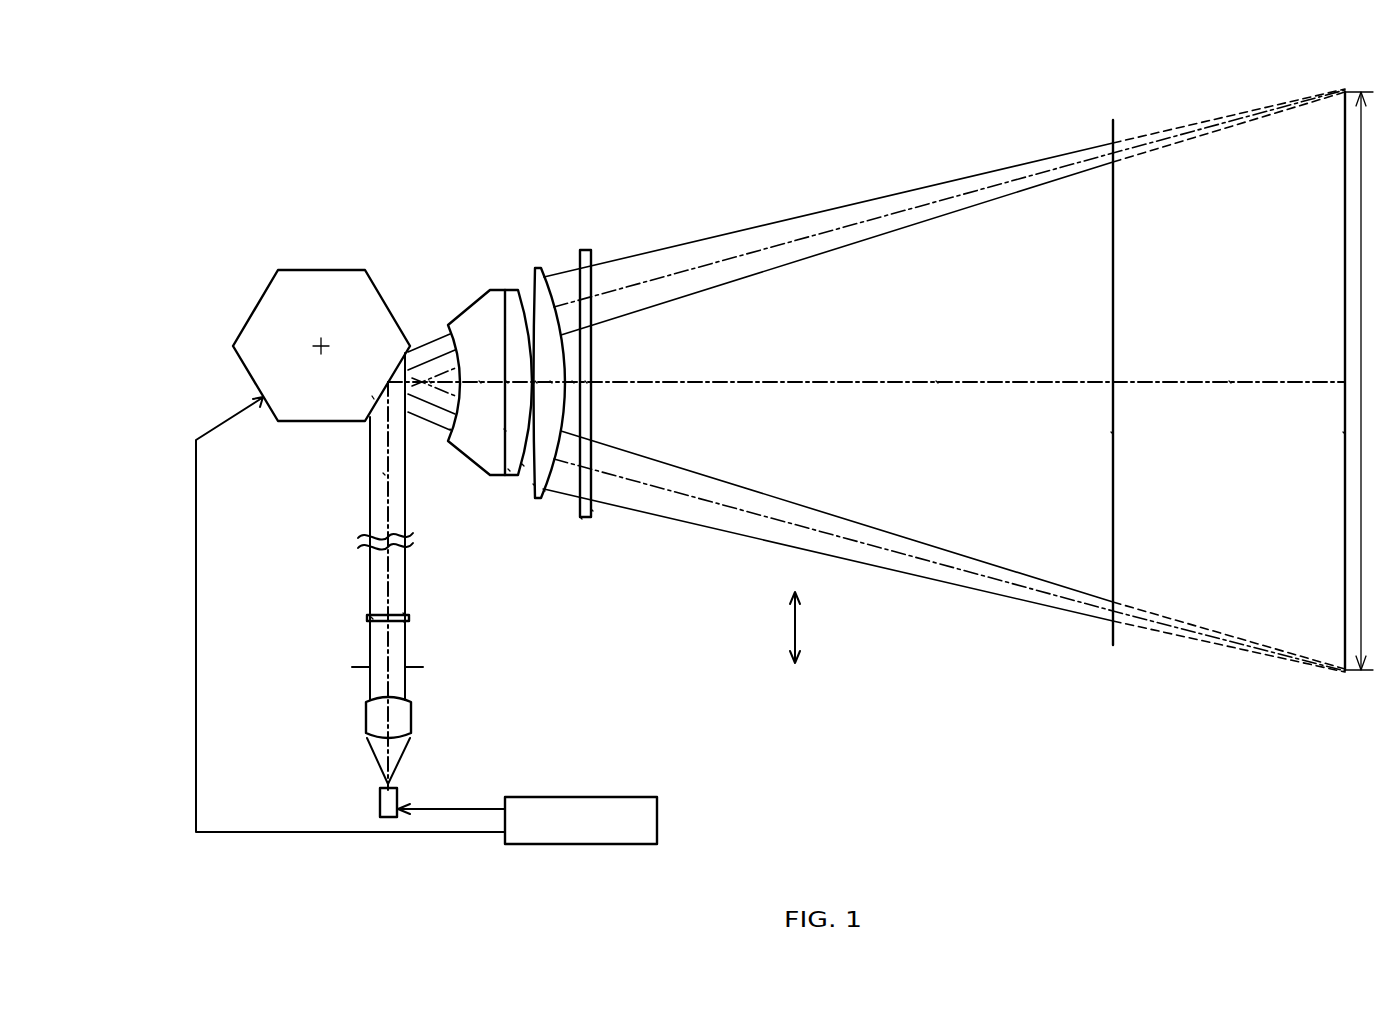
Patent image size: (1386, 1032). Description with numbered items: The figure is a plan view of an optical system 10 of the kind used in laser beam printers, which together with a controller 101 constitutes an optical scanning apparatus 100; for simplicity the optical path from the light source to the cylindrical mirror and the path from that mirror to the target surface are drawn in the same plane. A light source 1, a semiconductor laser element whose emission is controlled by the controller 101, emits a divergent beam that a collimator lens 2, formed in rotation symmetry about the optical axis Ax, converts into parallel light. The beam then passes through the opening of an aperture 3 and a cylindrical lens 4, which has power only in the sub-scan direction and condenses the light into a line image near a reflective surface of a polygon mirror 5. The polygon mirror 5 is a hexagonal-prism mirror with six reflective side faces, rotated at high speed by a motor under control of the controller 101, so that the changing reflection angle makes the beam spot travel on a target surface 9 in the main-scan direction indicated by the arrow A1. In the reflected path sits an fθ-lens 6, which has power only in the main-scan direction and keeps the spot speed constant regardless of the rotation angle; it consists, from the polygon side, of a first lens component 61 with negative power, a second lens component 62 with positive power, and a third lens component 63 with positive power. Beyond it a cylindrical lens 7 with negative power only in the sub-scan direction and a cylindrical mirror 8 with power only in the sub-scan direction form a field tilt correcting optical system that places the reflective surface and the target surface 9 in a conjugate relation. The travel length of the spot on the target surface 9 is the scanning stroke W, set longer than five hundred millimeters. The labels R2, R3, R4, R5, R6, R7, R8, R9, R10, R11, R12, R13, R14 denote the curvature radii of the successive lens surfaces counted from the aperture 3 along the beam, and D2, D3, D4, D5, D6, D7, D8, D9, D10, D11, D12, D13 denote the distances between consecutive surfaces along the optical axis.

The light source 1 is at (380, 803).
The collimator lens 2 is at (366, 716).
The aperture 3 is at (358, 668).
The cylindrical lens 4 is at (368, 620).
The polygon mirror 5 is at (300, 270).
The fθ-lens 6 is at (506, 316).
The first lens component 61 is at (470, 306).
The second lens component 62 is at (511, 290).
The third lens component 63 is at (550, 338).
The cylindrical lens 7 is at (592, 256).
The cylindrical mirror 8 is at (1110, 134).
The target surface 9 is at (1343, 118).
The optical system 10 is at (652, 670).
The optical scanning apparatus 100 is at (843, 693).
The controller 101 is at (658, 820).
The optical axis Ax is at (392, 716).
The main-scan direction A1 is at (802, 625).
The scanning stroke W is at (1365, 381).
The distance between second and third lens surfaces D2 is at (372, 618).
The distance between third and fourth lens surfaces D3 is at (384, 474).
The distance between fourth and fifth lens surfaces D4 is at (430, 382).
The distance between fifth and sixth lens surfaces D5 is at (480, 382).
The distance between sixth and seventh lens surfaces D6 is at (507, 382).
The distance between seventh and eighth lens surfaces D7 is at (533, 382).
The distance between eighth and ninth lens surfaces D8 is at (536, 382).
The distance between ninth and tenth lens surfaces D9 is at (551, 382).
The distance between tenth and eleventh lens surfaces D10 is at (573, 382).
The distance between eleventh and twelfth lens surfaces D11 is at (586, 382).
The distance between twelfth and thirteenth lens surfaces D12 is at (937, 368).
The distance between thirteenth and fourteenth lens surfaces D13 is at (1230, 368).
The curvature radius of second lens surface R2 is at (404, 622).
The curvature radius of third lens surface R3 is at (404, 614).
The curvature radius of fourth lens surface R4 is at (373, 397).
The curvature radius of fifth lens surface R5 is at (451, 430).
The curvature radius of sixth lens surface R6 is at (505, 430).
The curvature radius of seventh lens surface R7 is at (509, 470).
The curvature radius of eighth lens surface R8 is at (523, 465).
The curvature radius of ninth lens surface R9 is at (534, 485).
The curvature radius of tenth lens surface R10 is at (544, 490).
The curvature radius of eleventh lens surface R11 is at (581, 518).
The curvature radius of twelfth lens surface R12 is at (592, 510).
The curvature radius of thirteenth lens surface R13 is at (1111, 433).
The curvature radius of fourteenth lens surface R14 is at (1343, 433).